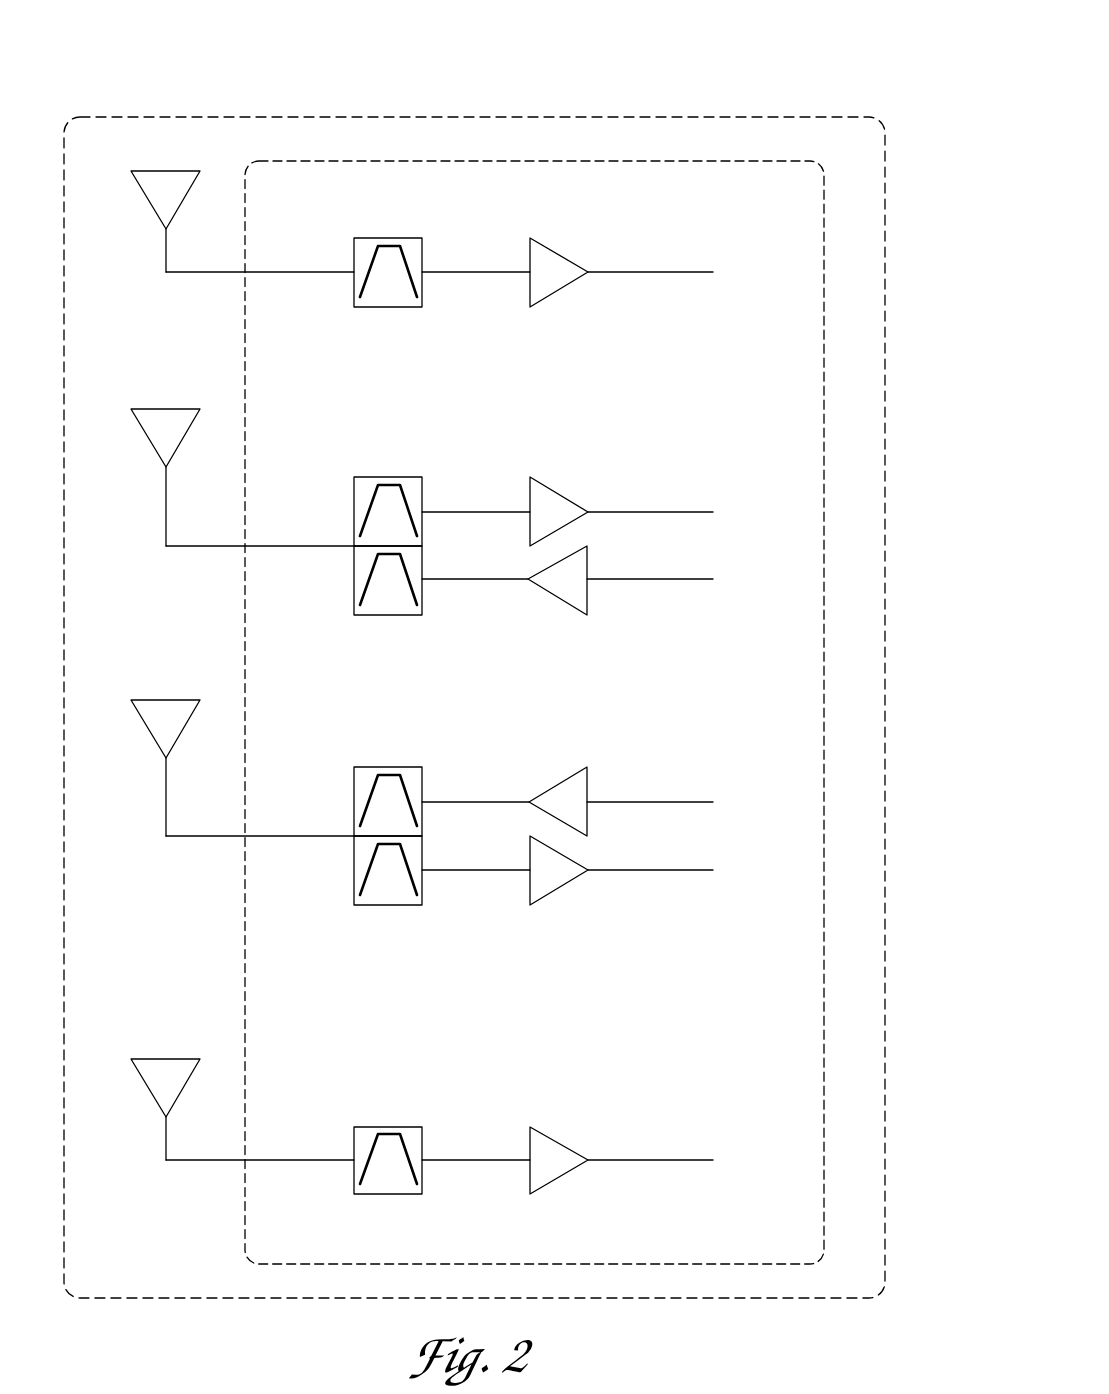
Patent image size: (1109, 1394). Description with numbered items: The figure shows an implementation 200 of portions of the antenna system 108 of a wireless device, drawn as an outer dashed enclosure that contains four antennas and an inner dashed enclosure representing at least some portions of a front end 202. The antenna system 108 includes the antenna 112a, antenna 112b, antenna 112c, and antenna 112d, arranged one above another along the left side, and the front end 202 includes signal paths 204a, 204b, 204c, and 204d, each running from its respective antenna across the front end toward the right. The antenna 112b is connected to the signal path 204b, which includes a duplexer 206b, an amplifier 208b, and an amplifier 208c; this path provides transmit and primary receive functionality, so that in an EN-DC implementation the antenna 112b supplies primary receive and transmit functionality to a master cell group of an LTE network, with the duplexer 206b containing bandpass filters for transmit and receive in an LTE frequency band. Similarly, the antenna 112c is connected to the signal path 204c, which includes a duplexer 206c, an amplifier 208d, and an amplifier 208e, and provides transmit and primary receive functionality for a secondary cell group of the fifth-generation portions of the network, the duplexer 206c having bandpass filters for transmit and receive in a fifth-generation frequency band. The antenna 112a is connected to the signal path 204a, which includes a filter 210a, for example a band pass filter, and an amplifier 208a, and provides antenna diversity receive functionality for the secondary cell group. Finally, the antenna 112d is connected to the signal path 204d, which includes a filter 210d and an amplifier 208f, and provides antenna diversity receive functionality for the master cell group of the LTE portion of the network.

The implementation 200 is at (783, 73).
The antenna system 108 is at (268, 117).
The front end 202 is at (578, 160).
The antenna 112a is at (223, 148).
The antenna 112b is at (212, 377).
The antenna 112c is at (208, 671).
The antenna 112d is at (208, 1029).
The signal path 204a is at (280, 272).
The signal path 204b is at (283, 546).
The signal path 204c is at (268, 836).
The signal path 204d is at (261, 1160).
The filter 210a is at (460, 201).
The filter 210d is at (470, 1088).
The duplexer 206b is at (407, 485).
The duplexer 206c is at (415, 773).
The amplifier 208a is at (608, 223).
The amplifier 208b is at (540, 495).
The amplifier 208c is at (570, 588).
The amplifier 208d is at (565, 785).
The amplifier 208e is at (560, 880).
The amplifier 208f is at (616, 1111).